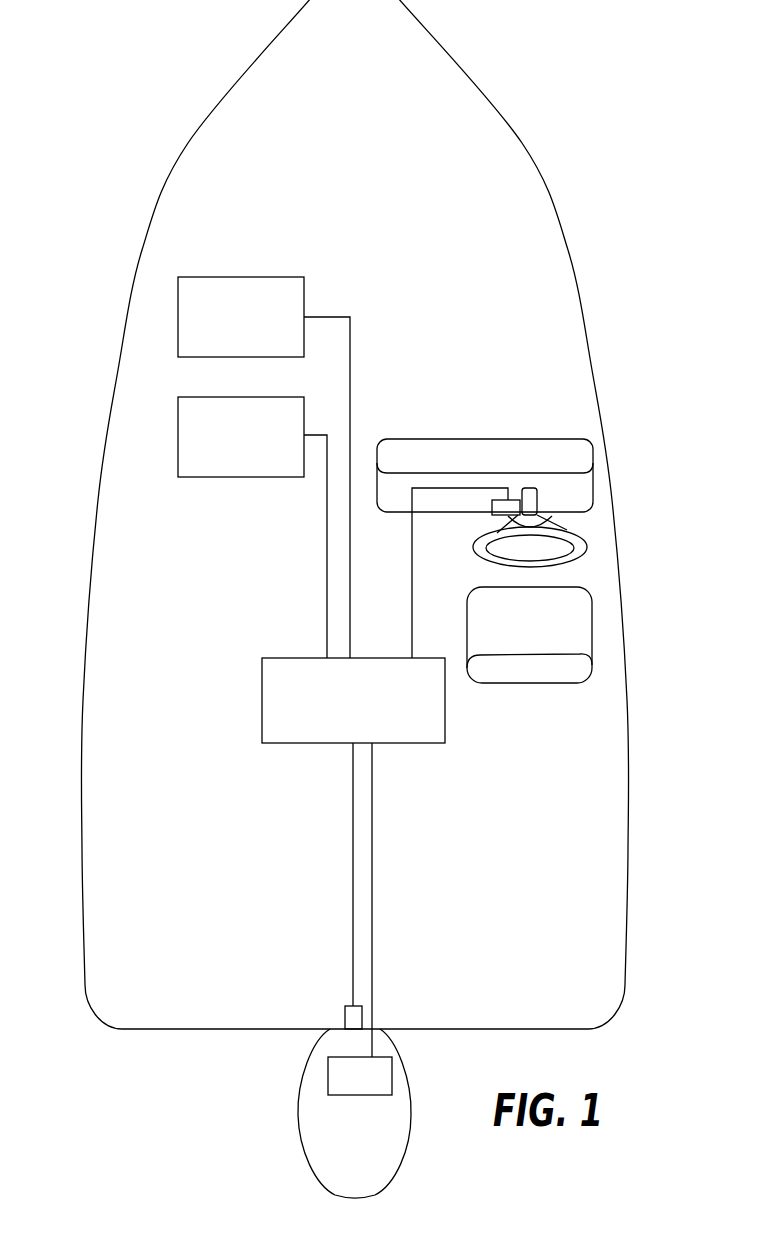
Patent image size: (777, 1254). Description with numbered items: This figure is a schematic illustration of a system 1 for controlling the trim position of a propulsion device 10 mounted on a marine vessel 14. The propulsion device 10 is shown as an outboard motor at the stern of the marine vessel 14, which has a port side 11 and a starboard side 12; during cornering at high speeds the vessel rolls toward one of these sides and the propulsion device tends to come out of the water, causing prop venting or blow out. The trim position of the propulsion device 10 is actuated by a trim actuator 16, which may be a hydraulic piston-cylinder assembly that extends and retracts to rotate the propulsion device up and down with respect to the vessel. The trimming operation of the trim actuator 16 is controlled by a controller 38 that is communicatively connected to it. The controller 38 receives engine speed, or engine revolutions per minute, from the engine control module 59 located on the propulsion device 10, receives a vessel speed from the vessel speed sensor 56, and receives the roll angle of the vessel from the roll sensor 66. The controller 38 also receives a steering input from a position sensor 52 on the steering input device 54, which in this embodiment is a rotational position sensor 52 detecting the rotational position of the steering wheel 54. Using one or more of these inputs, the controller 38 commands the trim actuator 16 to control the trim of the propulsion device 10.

The system 1 is at (113, 120).
The propulsion device 10 is at (303, 1152).
The port side 11 is at (130, 293).
The starboard side 12 is at (579, 292).
The marine vessel 14 is at (522, 143).
The trim actuator 16 is at (343, 1017).
The controller 38 is at (262, 688).
The position sensor 52 is at (513, 501).
The steering input device 54 is at (583, 548).
The vessel speed sensor 56 is at (233, 277).
The engine control module 59 is at (328, 1073).
The roll sensor 66 is at (235, 477).